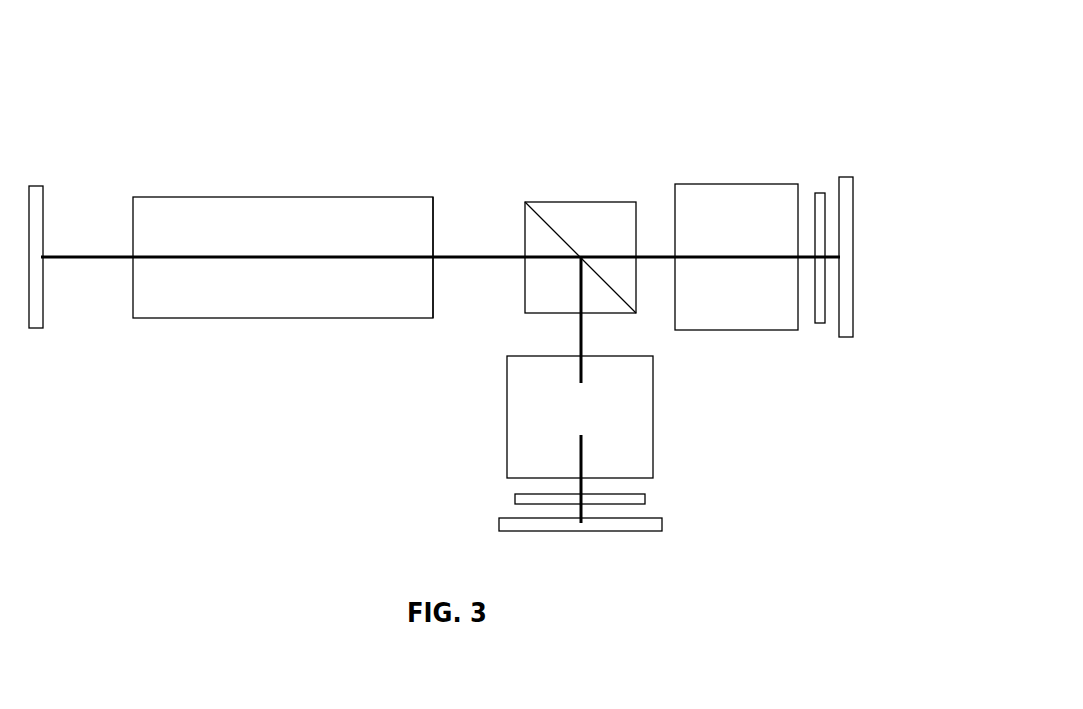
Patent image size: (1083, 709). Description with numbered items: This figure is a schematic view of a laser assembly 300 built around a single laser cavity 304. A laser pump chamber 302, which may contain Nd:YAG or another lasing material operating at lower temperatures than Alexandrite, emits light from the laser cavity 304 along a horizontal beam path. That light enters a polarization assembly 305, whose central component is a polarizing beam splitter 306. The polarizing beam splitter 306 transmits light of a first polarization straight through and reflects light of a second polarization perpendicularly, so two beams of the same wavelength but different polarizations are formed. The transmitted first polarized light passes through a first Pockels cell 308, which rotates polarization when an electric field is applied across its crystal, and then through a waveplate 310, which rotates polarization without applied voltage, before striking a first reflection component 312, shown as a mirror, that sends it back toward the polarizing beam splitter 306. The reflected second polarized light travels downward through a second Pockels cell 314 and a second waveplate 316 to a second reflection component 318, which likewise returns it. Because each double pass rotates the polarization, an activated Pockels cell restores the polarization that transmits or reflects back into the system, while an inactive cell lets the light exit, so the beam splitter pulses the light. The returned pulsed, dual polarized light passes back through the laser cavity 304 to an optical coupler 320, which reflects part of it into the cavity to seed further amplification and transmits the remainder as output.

The laser assembly 300 is at (838, 36).
The laser pump chamber 302 is at (360, 196).
The laser cavity 304 is at (435, 250).
The polarization assembly 305 is at (706, 88).
The polarizing beam splitter 306 is at (610, 200).
The first Pockels cell 308 is at (748, 331).
The waveplate 310 is at (818, 193).
The first reflection component 312 is at (855, 214).
The second Pockels cell 314 is at (654, 373).
The second waveplate 316 is at (515, 499).
The second reflection component 318 is at (632, 532).
The optical coupler 320 is at (42, 186).